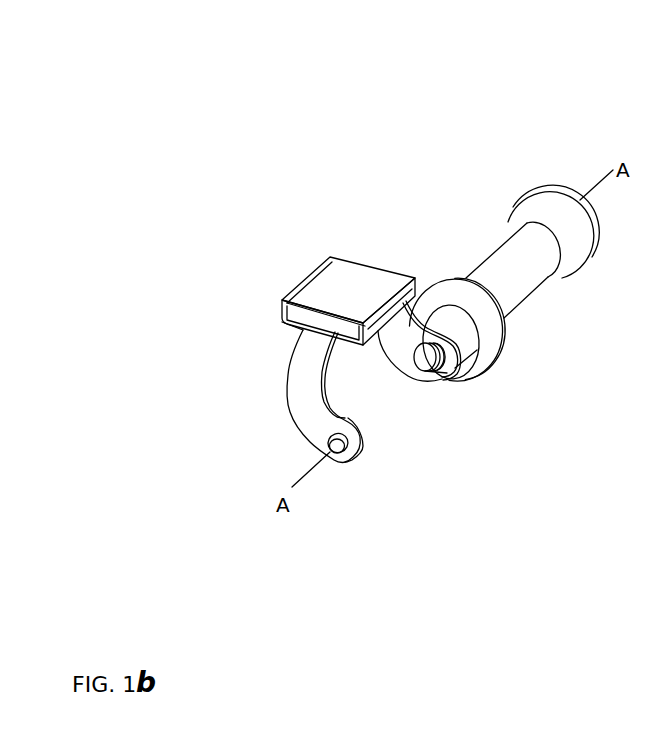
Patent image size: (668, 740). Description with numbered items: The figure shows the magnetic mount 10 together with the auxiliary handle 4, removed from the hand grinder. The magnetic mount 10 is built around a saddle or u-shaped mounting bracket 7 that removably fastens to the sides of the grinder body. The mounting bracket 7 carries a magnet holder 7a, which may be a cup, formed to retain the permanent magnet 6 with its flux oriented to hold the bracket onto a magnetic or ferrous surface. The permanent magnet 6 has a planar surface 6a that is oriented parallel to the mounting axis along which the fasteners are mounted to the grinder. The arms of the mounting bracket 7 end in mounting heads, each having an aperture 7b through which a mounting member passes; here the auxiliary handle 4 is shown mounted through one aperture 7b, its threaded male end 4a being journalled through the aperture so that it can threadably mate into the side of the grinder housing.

The magnetic mount 10 is at (209, 125).
The auxiliary handle 4 is at (470, 281).
The threaded male end 4a is at (424, 372).
The permanent magnet 6 is at (350, 300).
The planar surface 6a is at (374, 280).
The mounting bracket 7 is at (313, 348).
The magnet holder 7a is at (281, 324).
The aperture 7b is at (340, 460).